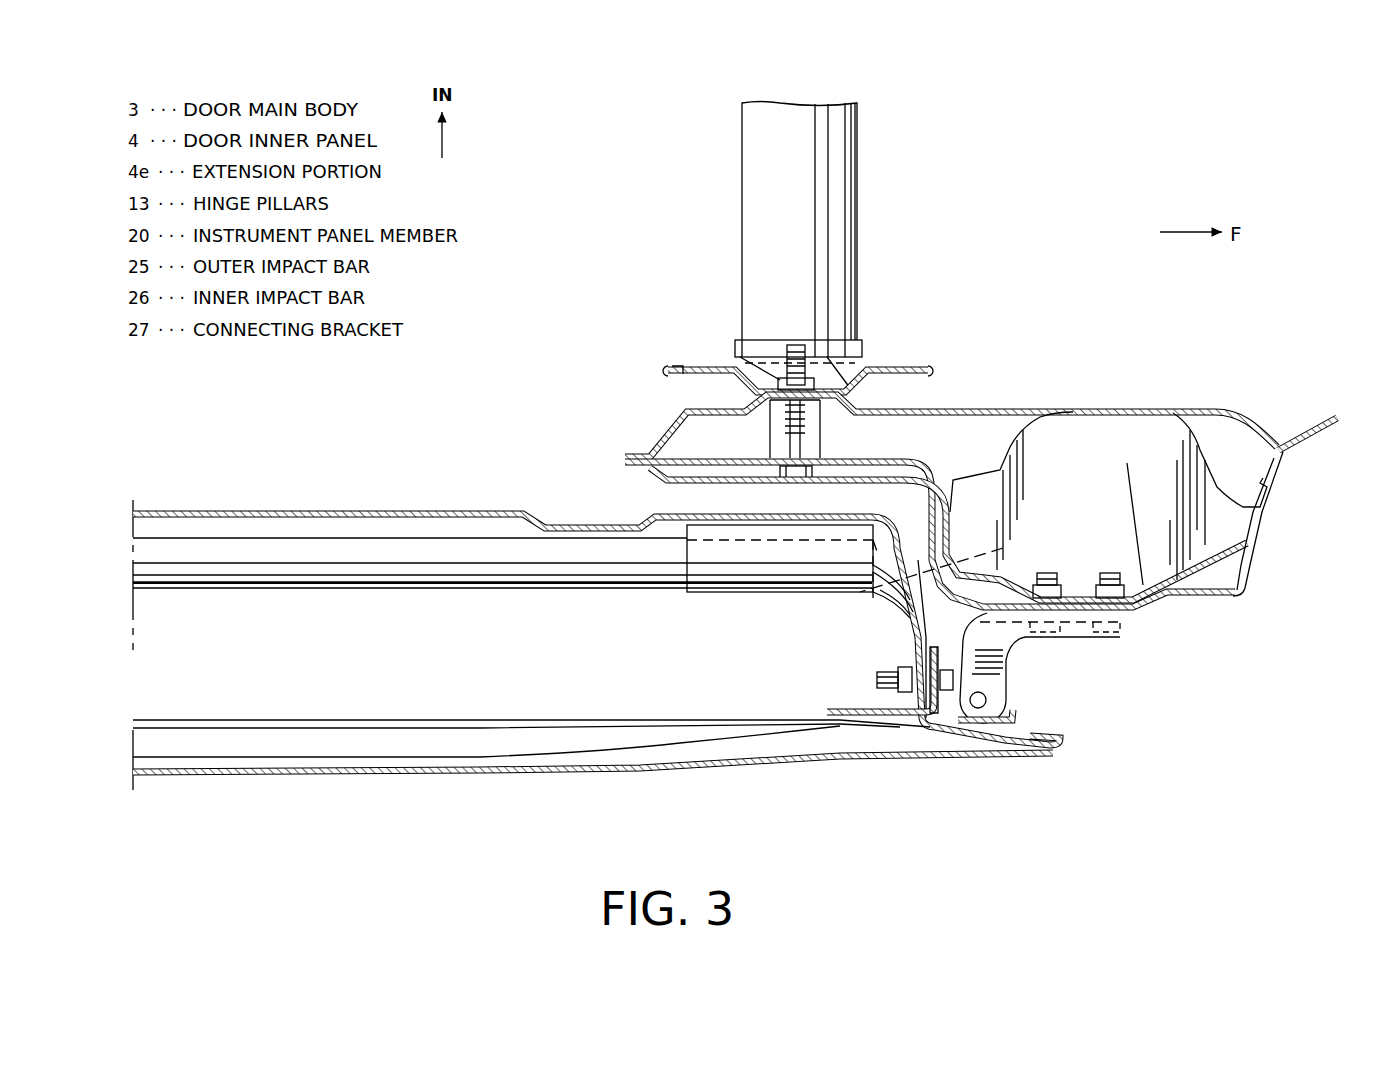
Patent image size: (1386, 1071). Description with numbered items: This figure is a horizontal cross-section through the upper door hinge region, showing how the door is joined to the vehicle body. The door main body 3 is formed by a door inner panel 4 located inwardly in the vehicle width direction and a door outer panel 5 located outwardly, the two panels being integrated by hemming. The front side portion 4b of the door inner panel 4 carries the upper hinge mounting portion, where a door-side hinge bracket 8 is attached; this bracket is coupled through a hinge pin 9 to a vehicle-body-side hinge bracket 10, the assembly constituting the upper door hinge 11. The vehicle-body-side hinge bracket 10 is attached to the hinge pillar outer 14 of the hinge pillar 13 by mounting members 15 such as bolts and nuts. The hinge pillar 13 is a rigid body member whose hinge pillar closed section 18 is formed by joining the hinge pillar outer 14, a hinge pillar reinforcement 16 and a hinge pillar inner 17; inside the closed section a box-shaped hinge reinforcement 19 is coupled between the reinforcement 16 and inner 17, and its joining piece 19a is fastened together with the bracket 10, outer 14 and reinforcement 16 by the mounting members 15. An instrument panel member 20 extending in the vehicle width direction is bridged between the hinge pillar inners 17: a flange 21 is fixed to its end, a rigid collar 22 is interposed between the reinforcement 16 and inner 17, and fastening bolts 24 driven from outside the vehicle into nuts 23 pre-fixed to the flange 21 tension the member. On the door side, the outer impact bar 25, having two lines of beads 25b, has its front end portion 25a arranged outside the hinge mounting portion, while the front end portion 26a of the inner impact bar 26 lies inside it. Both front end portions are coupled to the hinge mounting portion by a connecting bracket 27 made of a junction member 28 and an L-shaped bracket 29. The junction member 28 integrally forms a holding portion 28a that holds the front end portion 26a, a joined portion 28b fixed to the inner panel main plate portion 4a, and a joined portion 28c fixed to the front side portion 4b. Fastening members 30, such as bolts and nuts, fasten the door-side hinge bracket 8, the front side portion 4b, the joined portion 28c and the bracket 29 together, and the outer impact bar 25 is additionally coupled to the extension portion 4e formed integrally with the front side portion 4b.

The door main body 3 is at (195, 498).
The door inner panel 4 is at (268, 505).
The inner panel main plate portion 4a is at (420, 510).
The front side portion 4b is at (880, 580).
The extension portion 4e is at (953, 727).
The door outer panel 5 is at (748, 760).
The door-side hinge bracket 8 is at (1013, 712).
The hinge pin 9 is at (987, 700).
The vehicle-body-side hinge bracket 10 is at (1007, 652).
The upper door hinge 11 is at (1062, 719).
The hinge pillar 13 is at (1100, 396).
The hinge pillar outer 14 is at (1170, 614).
The mounting members 15 is at (1110, 572).
The hinge pillar reinforcement 16 is at (940, 470).
The hinge pillar inner 17 is at (975, 410).
The hinge pillar closed section 18 is at (1225, 445).
The hinge reinforcement 19 is at (1057, 432).
The joining piece 19a is at (1143, 585).
The instrument panel member 20 is at (742, 212).
The flange 21 is at (668, 384).
The collar 22 is at (770, 426).
The nuts 23 is at (770, 362).
The fastening bolts 24 is at (800, 480).
The outer impact bar 25 is at (457, 718).
The front end portion of outer impact bar 25a is at (883, 745).
The beads 25b is at (308, 757).
The inner impact bar 26 is at (278, 585).
The front end portion of inner impact bar 26a is at (1003, 548).
The connecting bracket 27 is at (667, 696).
The junction member 28 is at (710, 597).
The holding portion 28a is at (733, 560).
The joined portion 28b is at (720, 540).
The joined portion 28c is at (900, 603).
The bracket 29 is at (853, 707).
The fastening members 30 is at (883, 689).